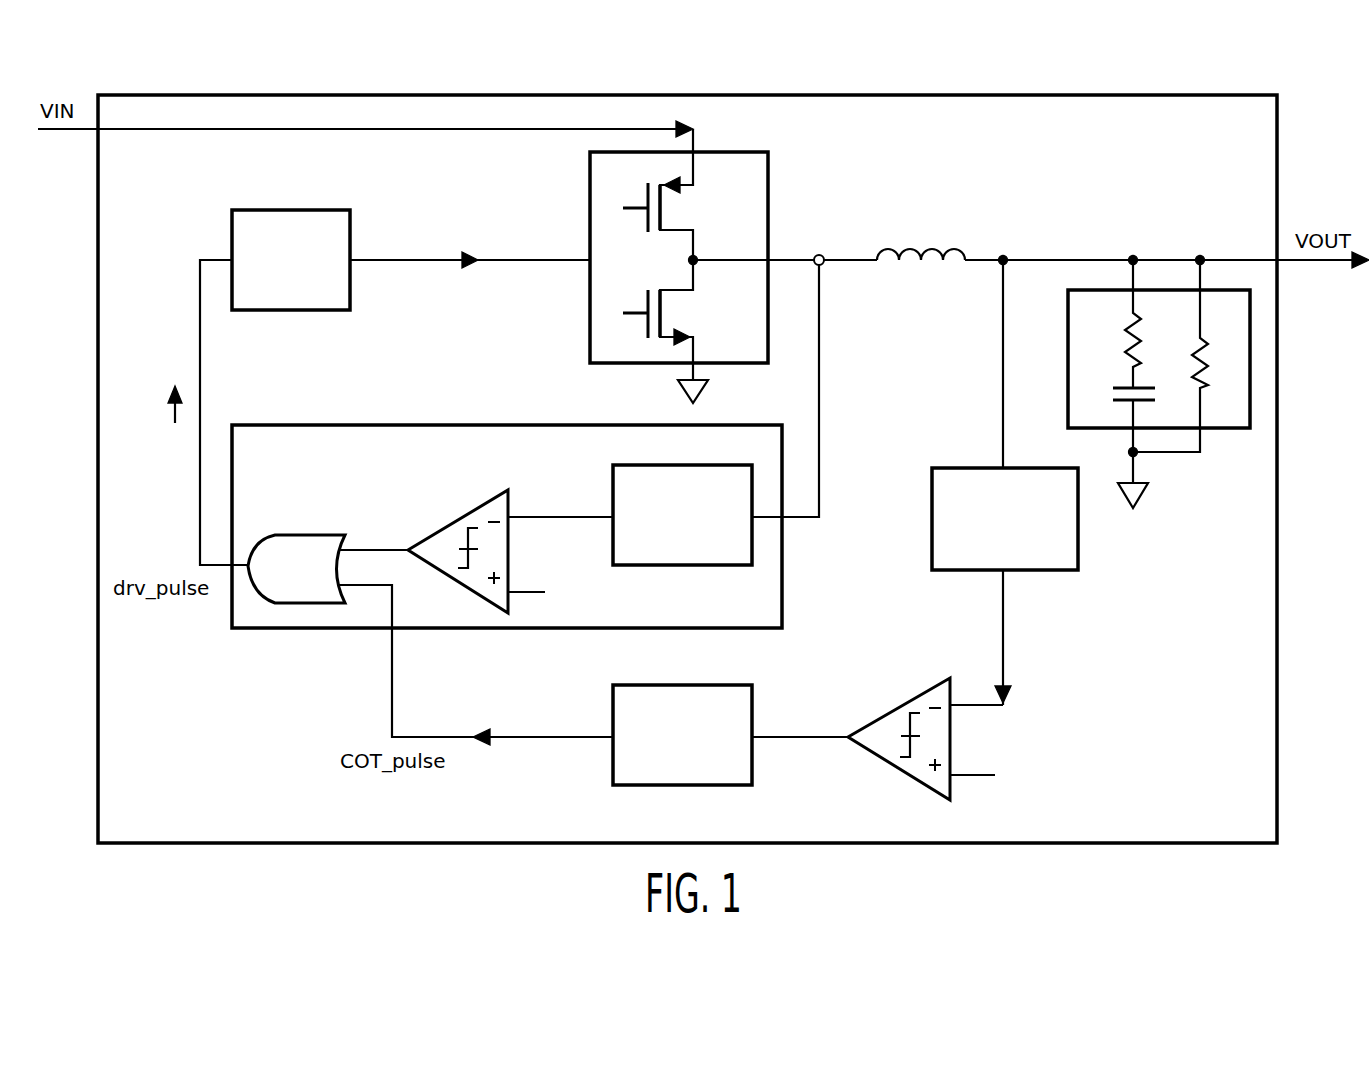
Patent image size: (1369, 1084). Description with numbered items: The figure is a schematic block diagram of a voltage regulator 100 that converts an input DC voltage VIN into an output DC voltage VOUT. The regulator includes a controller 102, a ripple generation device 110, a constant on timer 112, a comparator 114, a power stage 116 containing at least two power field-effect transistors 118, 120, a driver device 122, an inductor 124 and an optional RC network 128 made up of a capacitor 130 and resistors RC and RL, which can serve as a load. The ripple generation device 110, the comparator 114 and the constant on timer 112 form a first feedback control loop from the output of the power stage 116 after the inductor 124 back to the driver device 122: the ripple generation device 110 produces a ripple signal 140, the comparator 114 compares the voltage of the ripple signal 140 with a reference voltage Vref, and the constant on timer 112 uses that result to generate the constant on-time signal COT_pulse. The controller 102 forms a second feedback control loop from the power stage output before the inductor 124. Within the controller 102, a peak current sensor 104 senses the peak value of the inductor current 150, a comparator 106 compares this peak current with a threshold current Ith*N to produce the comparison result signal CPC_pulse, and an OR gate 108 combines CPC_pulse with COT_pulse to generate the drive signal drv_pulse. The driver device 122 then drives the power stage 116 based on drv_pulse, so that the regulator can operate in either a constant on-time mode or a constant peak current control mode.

The voltage regulator 100 is at (1280, 142).
The controller 102 is at (455, 630).
The peak current sensor 104 is at (697, 567).
The comparator 106 is at (508, 497).
The OR gate 108 is at (270, 535).
The ripple generation device 110 is at (932, 542).
The constant on timer 112 is at (613, 762).
The comparator 114 is at (920, 690).
The power stage 116 is at (629, 266).
The power field-effect transistor 118 is at (668, 207).
The power field-effect transistor 120 is at (668, 300).
The driver device 122 is at (287, 312).
The inductor 124 is at (952, 248).
The RC network 128 is at (1162, 394).
The capacitor 130 is at (1118, 388).
The ripple signal 140 is at (1005, 660).
The inductor current 150 is at (819, 420).